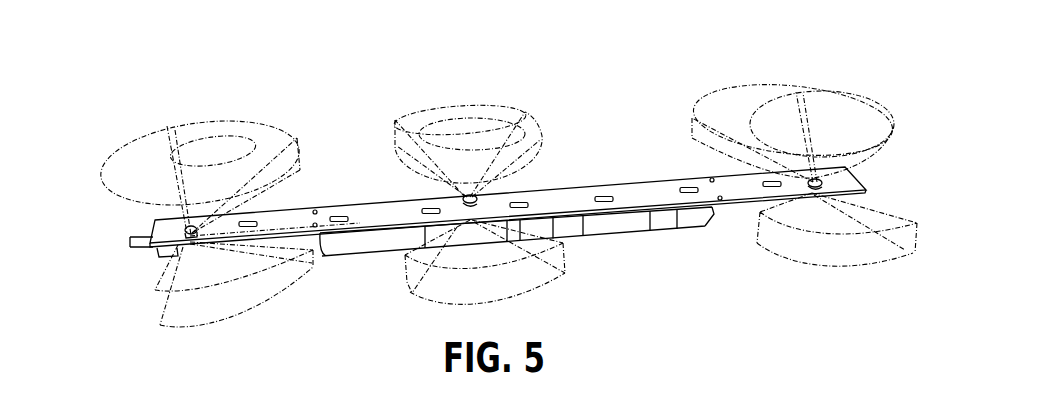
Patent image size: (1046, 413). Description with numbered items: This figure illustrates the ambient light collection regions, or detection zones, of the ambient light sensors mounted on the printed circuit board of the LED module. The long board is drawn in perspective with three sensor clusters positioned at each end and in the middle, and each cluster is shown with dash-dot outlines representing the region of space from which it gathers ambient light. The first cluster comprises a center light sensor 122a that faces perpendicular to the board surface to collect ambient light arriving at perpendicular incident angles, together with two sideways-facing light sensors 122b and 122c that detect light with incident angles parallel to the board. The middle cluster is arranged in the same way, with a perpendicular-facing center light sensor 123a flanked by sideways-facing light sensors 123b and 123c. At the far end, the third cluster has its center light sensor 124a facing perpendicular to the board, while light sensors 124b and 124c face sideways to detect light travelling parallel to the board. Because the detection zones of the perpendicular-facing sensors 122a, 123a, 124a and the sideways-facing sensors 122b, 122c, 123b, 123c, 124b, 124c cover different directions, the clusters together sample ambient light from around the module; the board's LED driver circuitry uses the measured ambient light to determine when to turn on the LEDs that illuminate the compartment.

The center light sensor 122a is at (120, 203).
The sideways-facing light sensor 122b is at (167, 320).
The sideways-facing light sensor 122c is at (168, 131).
The center light sensor 123a is at (543, 142).
The sideways-facing light sensor 123b is at (411, 290).
The sideways-facing light sensor 123c is at (397, 124).
The center light sensor 124a is at (843, 97).
The sideways-facing light sensor 124b is at (757, 244).
The sideways-facing light sensor 124c is at (700, 112).